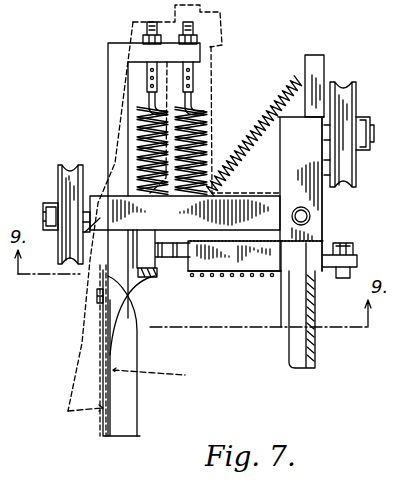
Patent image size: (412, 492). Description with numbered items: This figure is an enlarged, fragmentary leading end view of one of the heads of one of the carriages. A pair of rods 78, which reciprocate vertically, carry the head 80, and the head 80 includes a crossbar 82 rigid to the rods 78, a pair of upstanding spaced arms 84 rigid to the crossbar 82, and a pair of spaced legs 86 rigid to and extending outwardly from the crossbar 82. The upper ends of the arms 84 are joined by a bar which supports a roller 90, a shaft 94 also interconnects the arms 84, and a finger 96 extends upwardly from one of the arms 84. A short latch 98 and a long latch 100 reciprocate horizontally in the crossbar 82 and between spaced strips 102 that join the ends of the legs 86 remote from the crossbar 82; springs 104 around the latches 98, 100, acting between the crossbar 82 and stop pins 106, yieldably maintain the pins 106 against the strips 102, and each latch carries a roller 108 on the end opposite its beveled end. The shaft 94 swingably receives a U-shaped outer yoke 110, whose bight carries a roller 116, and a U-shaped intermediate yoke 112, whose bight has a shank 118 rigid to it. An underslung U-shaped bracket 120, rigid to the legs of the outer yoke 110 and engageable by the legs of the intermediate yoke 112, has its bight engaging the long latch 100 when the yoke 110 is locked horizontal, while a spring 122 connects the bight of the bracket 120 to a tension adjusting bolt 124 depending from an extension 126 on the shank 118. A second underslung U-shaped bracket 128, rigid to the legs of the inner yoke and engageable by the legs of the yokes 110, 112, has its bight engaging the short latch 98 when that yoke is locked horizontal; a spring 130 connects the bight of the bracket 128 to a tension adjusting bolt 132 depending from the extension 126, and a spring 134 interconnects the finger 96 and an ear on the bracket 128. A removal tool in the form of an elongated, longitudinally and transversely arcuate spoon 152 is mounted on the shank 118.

The rods 78 is at (315, 353).
The head 80 is at (330, 237).
The crossbar 82 is at (292, 250).
The arms 84 is at (318, 189).
The legs 86 is at (262, 271).
The roller 90 is at (346, 98).
The shaft 94 is at (302, 216).
The finger 96 is at (325, 63).
The short latch 98 is at (357, 262).
The long latch 100 is at (153, 268).
The strips 102 is at (197, 290).
The springs 104 is at (262, 272).
The stop pins 106 is at (219, 277).
The roller 108 is at (346, 279).
The outer yoke 110 is at (67, 273).
The intermediate yoke 112 is at (125, 170).
The roller 116 is at (58, 177).
The shank 118 is at (113, 101).
The bracket 120 is at (103, 298).
The spring 122 is at (209, 141).
The tension adjusting bolt 124 is at (148, 71).
The extension 126 is at (138, 51).
The bracket 128 is at (160, 298).
The spring 130 is at (162, 143).
The tension adjusting bolt 132 is at (192, 72).
The spring 134 is at (296, 80).
The spoon 152 is at (123, 416).